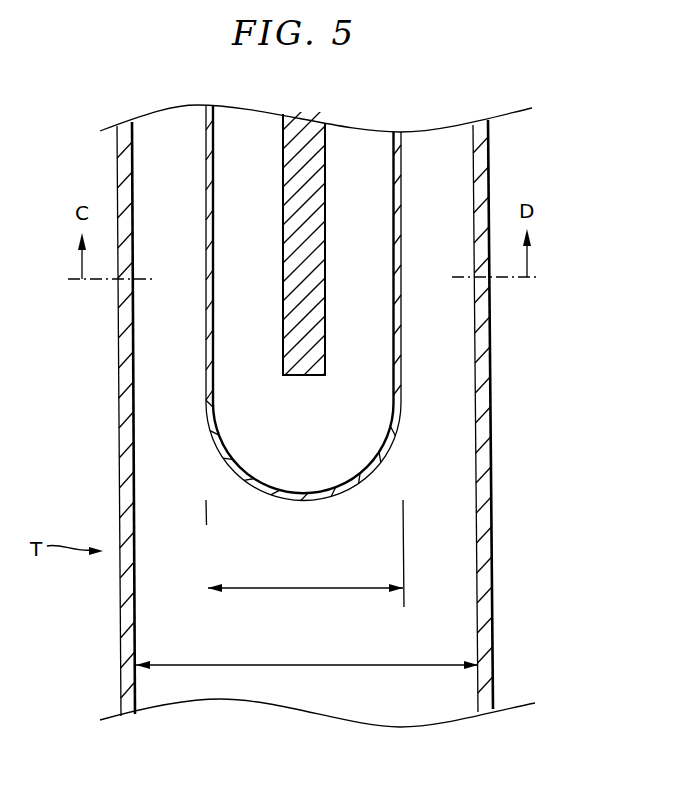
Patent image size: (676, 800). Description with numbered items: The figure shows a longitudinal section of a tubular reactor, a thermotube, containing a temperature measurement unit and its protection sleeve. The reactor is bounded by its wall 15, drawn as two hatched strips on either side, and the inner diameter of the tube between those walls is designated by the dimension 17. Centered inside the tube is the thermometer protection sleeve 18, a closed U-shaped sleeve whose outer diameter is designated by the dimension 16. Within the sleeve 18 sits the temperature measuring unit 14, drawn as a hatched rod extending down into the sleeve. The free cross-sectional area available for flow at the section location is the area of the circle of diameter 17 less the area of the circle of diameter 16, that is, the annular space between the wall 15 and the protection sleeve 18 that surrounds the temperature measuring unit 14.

The temperature measuring unit 14 is at (327, 338).
The wall 15 is at (118, 483).
The outer diameter of the thermometer protection sleeve 16 is at (277, 588).
The inner diameter of the tubular reactor 17 is at (352, 664).
The thermometer protection sleeve 18 is at (398, 282).